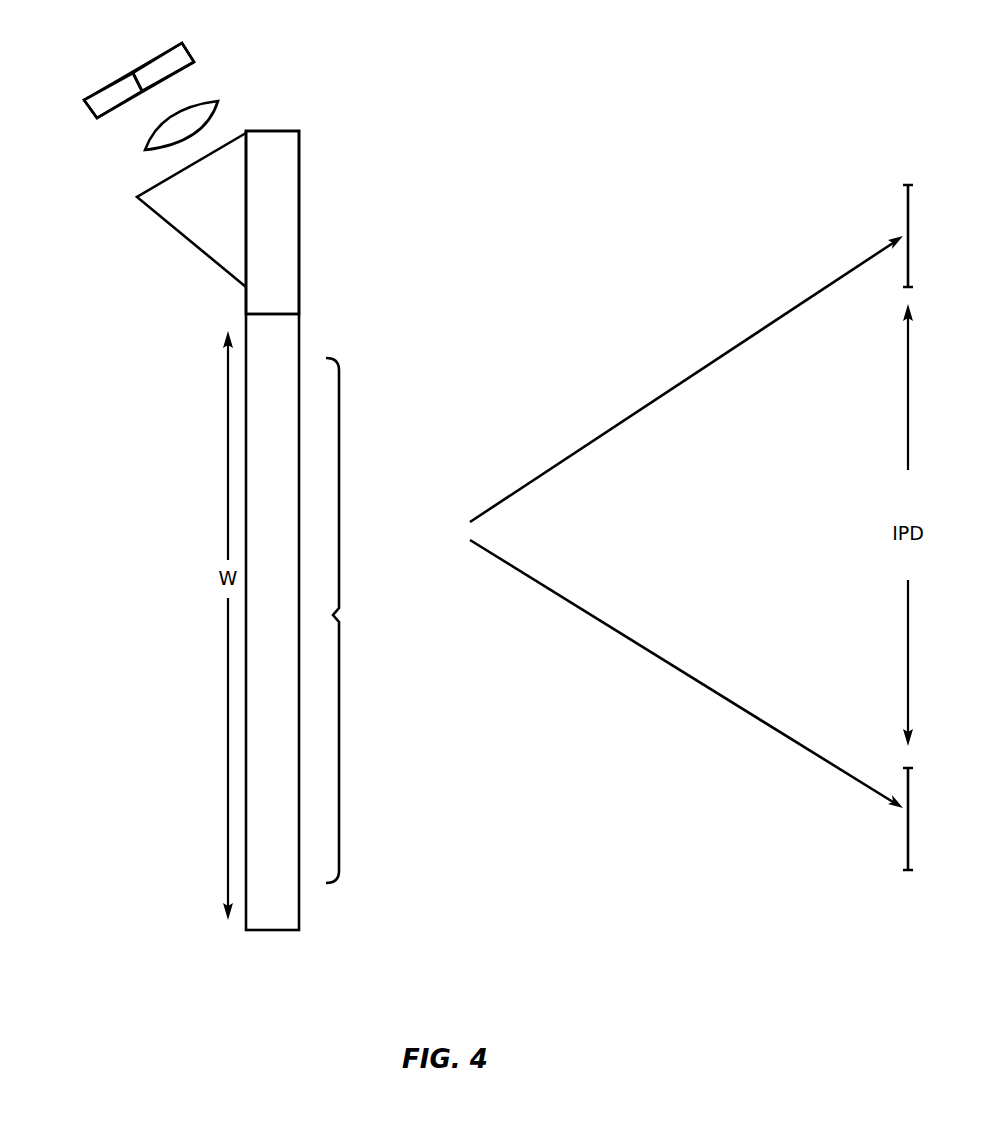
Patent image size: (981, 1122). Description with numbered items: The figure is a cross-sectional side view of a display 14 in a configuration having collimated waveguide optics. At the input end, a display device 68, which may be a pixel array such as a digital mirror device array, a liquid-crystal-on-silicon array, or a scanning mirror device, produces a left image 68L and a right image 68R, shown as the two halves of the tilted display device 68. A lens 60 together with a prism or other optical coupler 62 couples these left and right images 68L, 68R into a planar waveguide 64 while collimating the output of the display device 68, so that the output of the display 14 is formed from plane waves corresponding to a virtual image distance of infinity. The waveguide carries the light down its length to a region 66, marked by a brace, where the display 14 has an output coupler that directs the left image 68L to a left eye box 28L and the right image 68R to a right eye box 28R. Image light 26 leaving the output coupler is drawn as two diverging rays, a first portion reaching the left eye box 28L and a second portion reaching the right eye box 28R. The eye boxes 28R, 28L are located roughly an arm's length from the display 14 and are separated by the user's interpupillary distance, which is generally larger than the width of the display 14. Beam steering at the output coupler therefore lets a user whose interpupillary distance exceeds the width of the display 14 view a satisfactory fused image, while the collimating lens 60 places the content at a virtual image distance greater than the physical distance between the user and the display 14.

The display 14 is at (310, 934).
The image light 26 is at (592, 440).
The right eye box 28R is at (910, 182).
The left eye box 28L is at (907, 874).
The lens 60 is at (147, 149).
The prism / input coupler 62 is at (188, 241).
The planar waveguide 64 is at (299, 216).
The region 66 is at (353, 620).
The display device 68 is at (80, 76).
The left image 68L is at (90, 108).
The right image 68R is at (152, 68).